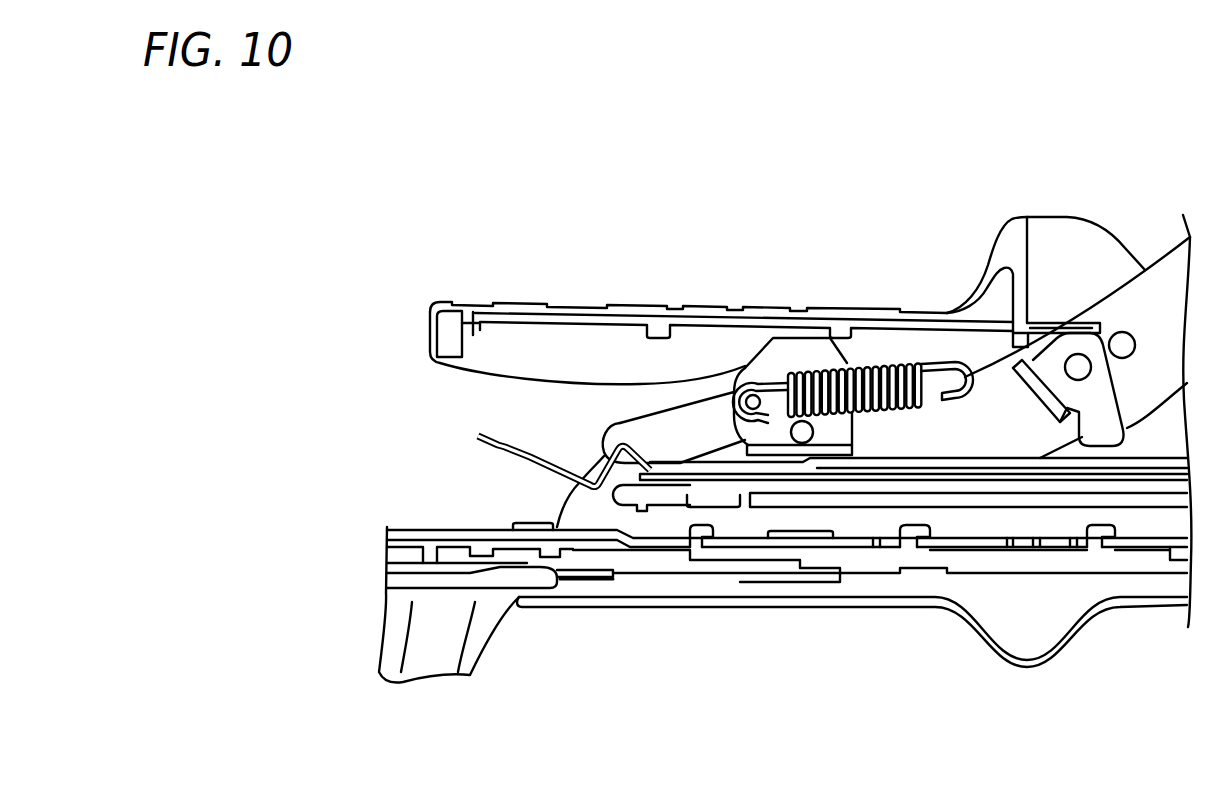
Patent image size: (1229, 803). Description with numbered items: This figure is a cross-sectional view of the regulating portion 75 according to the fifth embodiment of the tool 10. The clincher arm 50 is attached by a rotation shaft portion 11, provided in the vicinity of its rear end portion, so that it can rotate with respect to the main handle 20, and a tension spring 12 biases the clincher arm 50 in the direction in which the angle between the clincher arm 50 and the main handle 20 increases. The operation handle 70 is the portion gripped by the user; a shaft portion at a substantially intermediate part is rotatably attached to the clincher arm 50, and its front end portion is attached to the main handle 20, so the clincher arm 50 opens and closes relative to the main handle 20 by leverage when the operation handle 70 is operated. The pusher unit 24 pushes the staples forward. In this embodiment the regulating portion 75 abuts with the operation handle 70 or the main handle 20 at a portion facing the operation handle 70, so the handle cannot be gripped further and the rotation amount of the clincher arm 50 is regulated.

The apparatus 10 is at (805, 733).
The rotation shaft portion 11 is at (797, 437).
The tension spring 12 is at (895, 366).
The main handle 20 is at (366, 563).
The pusher unit 24 is at (503, 464).
The clincher arm 50 is at (1153, 262).
The operation handle 70 is at (702, 306).
The regulating portion 75 is at (800, 356).